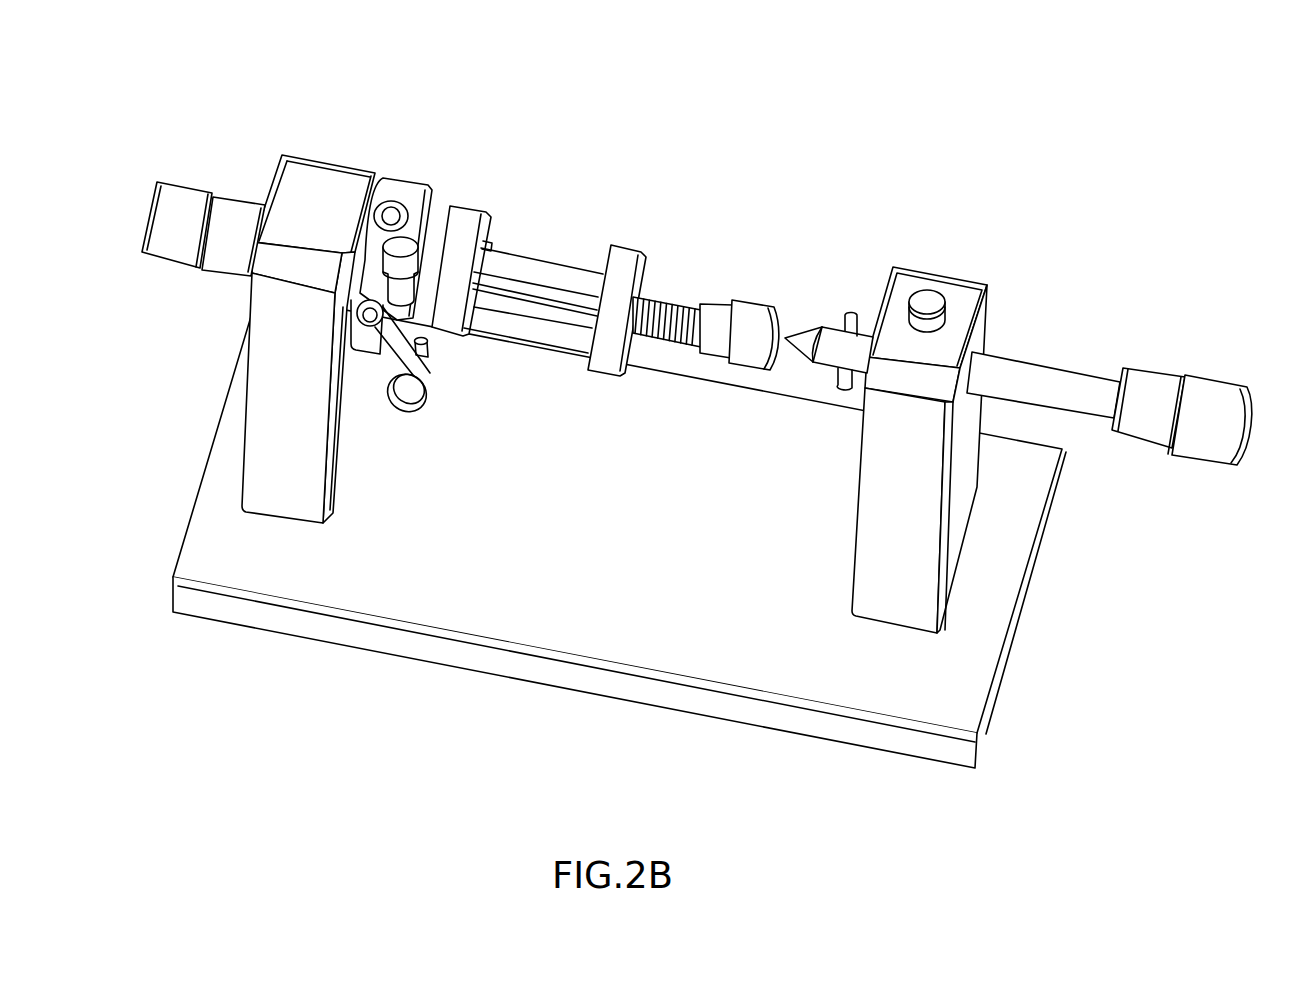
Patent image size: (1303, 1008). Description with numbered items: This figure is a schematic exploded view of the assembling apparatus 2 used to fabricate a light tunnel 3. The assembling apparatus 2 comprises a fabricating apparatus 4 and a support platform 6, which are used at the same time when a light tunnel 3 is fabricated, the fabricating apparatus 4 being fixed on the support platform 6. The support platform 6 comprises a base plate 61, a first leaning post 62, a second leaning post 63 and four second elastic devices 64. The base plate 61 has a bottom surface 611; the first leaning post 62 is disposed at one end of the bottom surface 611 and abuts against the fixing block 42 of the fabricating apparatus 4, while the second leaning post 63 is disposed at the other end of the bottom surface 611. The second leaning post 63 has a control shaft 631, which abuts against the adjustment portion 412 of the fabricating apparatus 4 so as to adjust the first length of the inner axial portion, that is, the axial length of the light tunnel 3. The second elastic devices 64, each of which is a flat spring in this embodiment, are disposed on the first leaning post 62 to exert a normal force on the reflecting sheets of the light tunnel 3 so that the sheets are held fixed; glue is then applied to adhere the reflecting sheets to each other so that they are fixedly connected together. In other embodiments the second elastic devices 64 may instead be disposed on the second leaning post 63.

The assembling apparatus 2 is at (697, 403).
The light tunnel 3 is at (523, 312).
The fabricating apparatus 4 is at (652, 254).
The fixing block 42 is at (399, 187).
The adjustment portion 412 is at (684, 287).
The support platform 6 is at (697, 429).
The base plate 61 is at (942, 750).
The bottom surface 611 is at (550, 590).
The first leaning post 62 is at (297, 370).
The second leaning post 63 is at (925, 465).
The control shaft 631 is at (988, 380).
The second elastic device 64 is at (386, 362).